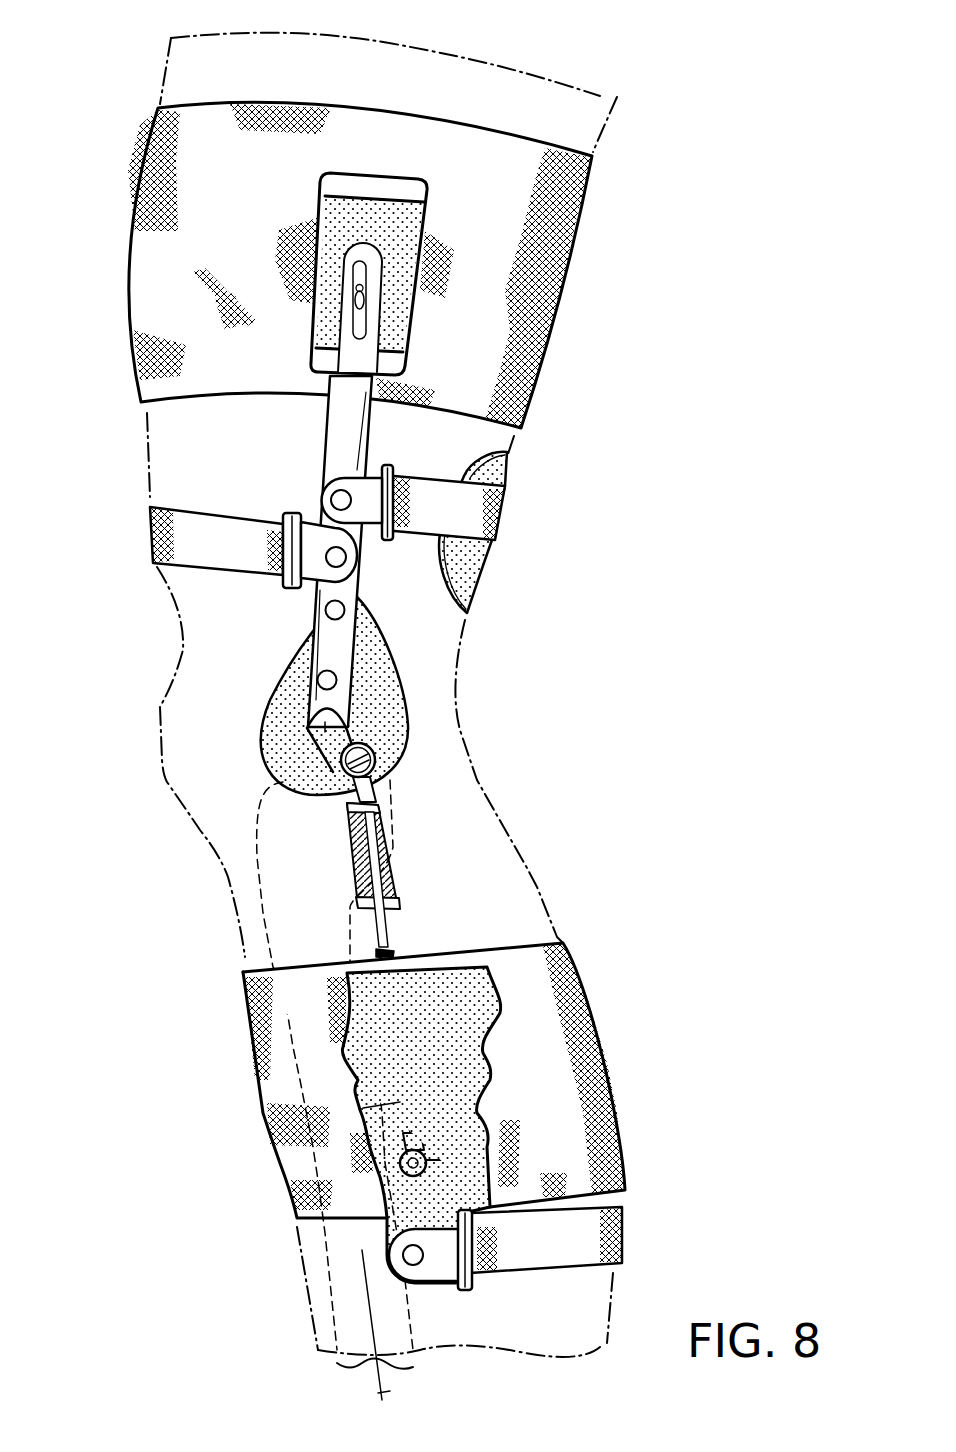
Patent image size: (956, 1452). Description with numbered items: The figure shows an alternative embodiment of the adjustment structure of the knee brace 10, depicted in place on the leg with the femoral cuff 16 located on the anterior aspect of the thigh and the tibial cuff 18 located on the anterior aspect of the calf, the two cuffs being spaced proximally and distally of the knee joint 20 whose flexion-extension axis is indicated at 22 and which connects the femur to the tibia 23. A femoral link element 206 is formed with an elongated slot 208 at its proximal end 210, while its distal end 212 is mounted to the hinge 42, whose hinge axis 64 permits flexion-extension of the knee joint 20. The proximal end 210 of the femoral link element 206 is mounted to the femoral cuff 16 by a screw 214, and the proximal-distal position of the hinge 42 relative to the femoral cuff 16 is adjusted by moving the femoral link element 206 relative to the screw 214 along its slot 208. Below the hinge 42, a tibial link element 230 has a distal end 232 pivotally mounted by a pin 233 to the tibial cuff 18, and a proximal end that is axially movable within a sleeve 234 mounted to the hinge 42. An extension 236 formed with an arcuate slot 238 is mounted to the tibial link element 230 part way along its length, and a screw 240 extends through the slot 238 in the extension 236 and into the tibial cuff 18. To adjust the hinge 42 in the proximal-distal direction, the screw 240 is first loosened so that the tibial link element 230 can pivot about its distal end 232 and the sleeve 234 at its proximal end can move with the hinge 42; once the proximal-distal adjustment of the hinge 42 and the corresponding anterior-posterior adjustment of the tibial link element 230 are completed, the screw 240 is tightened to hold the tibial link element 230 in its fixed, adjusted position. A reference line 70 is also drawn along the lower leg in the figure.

The knee brace 10 is at (393, 647).
The femoral cuff 16 is at (360, 265).
The tibial cuff 18 is at (467, 1123).
The knee joint 20 is at (199, 768).
The flexion-extension axis 22 is at (340, 758).
The tibia 23 is at (313, 1373).
The hinge 42 is at (377, 747).
The hinge axis 64 is at (415, 728).
The longitudinal axis 70 is at (385, 1392).
The femoral link element 206 is at (327, 432).
The elongated slot 208 is at (367, 321).
The proximal end 210 is at (361, 250).
The distal end 212 is at (312, 690).
The screw 214 is at (357, 297).
The tibial link element 230 is at (484, 989).
The distal end 232 is at (363, 1110).
The pin 233 is at (488, 1160).
The sleeve 234 is at (393, 882).
The extension 236 is at (468, 986).
The arcuate slot 238 is at (488, 993).
The screw 240 is at (432, 980).